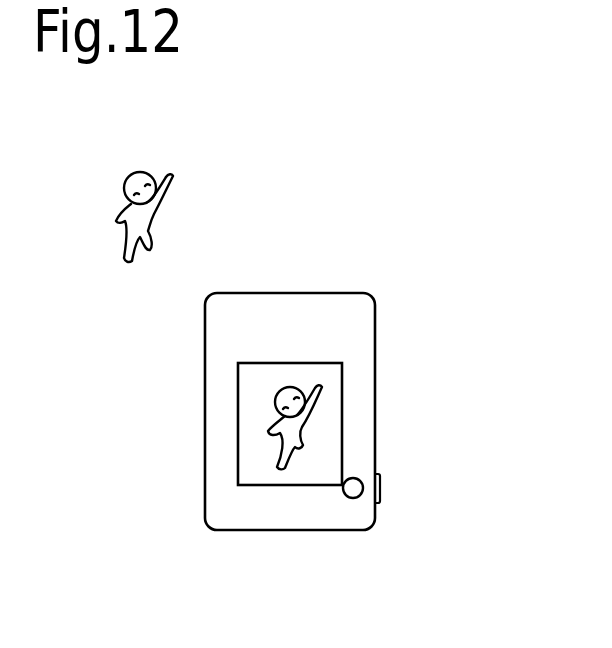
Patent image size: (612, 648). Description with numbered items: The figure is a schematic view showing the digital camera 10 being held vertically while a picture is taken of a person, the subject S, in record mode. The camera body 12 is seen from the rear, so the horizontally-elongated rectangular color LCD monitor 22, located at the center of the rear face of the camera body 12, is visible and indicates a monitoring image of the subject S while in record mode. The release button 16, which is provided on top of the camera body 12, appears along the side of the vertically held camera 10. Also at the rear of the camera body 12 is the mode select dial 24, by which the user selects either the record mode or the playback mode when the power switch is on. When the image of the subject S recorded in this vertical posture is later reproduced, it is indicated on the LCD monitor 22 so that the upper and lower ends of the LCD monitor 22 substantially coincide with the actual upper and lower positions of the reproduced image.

The digital camera 10 is at (295, 426).
The camera body 12 is at (242, 515).
The release button 16 is at (380, 489).
The LCD monitor 22 is at (240, 368).
The mode select dial 24 is at (348, 497).
The person (subject) S is at (101, 224).